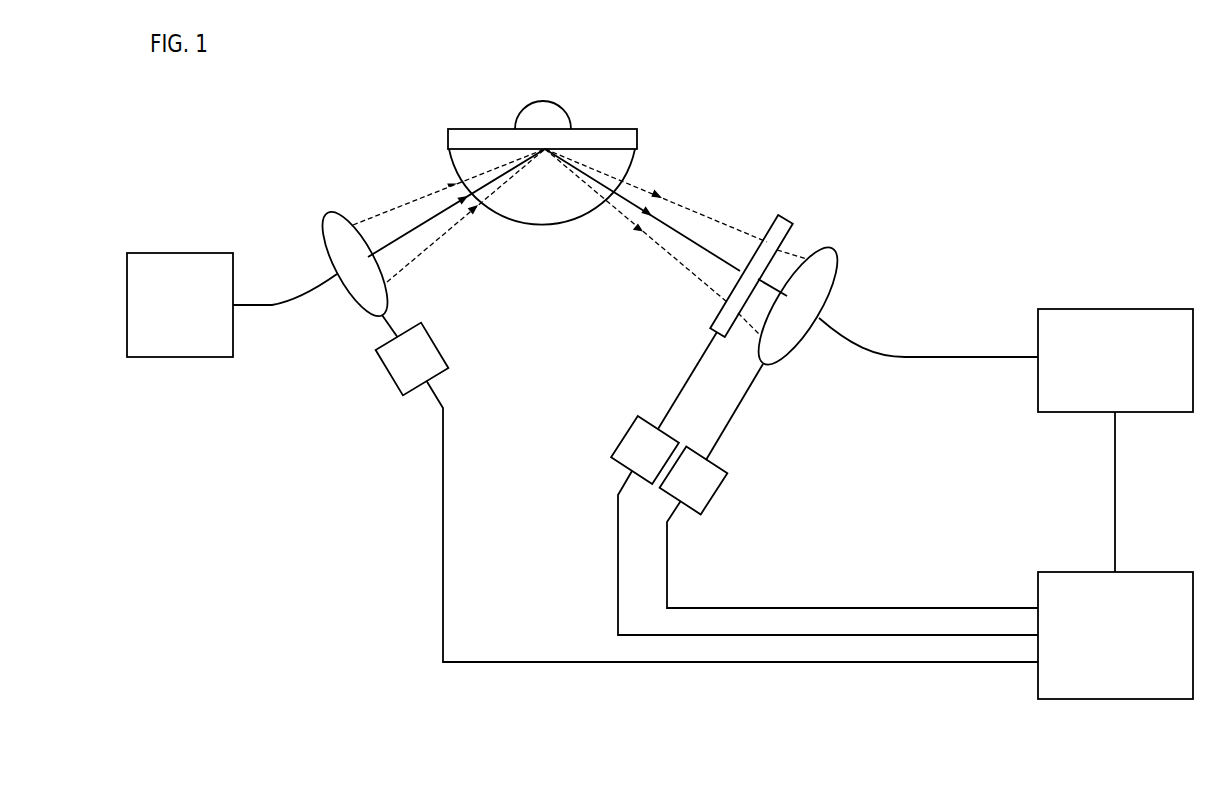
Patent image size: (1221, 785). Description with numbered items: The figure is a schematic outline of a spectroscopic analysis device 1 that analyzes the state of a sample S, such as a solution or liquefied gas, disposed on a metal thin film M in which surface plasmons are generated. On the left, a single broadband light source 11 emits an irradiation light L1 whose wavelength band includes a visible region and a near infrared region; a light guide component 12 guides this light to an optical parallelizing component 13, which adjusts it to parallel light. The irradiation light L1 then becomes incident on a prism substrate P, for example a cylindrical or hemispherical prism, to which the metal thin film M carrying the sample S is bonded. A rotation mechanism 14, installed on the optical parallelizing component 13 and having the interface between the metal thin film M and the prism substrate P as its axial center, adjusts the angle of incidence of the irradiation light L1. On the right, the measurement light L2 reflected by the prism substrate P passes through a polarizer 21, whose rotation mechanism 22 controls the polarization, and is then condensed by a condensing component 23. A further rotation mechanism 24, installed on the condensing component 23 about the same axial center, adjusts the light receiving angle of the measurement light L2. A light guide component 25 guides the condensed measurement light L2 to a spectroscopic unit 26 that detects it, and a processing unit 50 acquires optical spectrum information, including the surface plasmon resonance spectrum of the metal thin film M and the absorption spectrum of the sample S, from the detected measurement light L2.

The spectroscopic analysis device 1 is at (342, 630).
The broadband light source 11 is at (178, 253).
The light guide component 12 is at (275, 307).
The optical parallelizing component 13 is at (325, 218).
The rotation mechanism 14 is at (388, 385).
The polarizer 21 is at (787, 211).
The rotation mechanism 22 is at (622, 438).
The condensing component 23 is at (835, 245).
The rotation mechanism 24 is at (713, 495).
The light guide component 25 is at (962, 356).
The spectroscopic unit 26 is at (1119, 309).
The processing unit 50 is at (1117, 699).
The metal thin film M is at (475, 128).
The sample S is at (572, 122).
The prism substrate P is at (540, 230).
The irradiation light L1 is at (403, 233).
The measurement light L2 is at (632, 192).